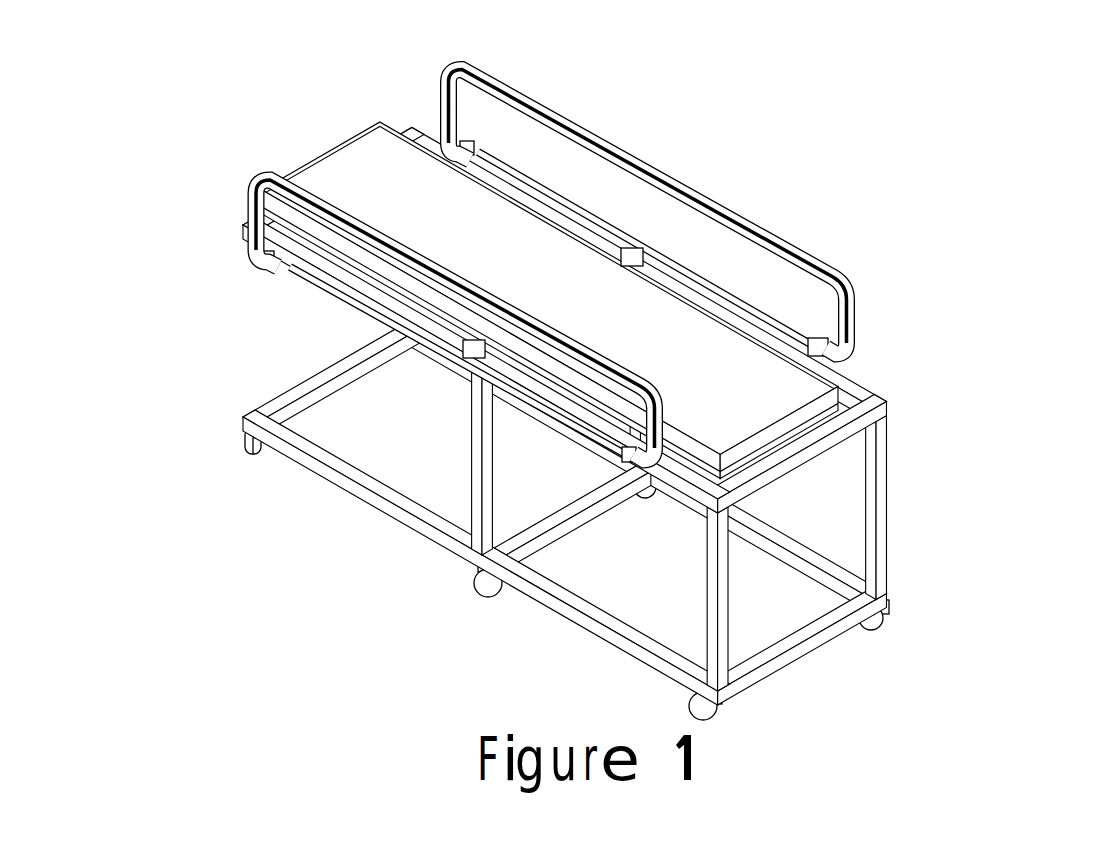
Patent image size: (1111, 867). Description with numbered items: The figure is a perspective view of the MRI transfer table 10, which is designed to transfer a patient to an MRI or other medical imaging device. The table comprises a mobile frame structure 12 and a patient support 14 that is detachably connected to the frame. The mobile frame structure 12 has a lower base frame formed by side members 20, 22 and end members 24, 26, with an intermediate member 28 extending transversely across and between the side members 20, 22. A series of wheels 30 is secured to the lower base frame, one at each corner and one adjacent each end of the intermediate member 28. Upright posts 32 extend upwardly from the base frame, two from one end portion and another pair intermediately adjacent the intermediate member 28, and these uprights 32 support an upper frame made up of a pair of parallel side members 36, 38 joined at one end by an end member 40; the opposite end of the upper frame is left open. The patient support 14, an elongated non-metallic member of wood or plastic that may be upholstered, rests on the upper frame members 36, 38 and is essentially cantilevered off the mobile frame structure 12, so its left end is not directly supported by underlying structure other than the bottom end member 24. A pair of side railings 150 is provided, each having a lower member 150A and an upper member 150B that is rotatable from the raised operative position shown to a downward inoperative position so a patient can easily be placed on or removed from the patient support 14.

The MRI transfer table 10 is at (621, 391).
The mobile frame structure 12 is at (621, 424).
The patient support 14 is at (805, 372).
The side member 20 is at (603, 640).
The side member 22 is at (787, 557).
The end member 24 is at (303, 387).
The end member 26 is at (822, 640).
The intermediate member 28 is at (560, 512).
The wheel 30 is at (243, 445).
The upright post 32 is at (480, 505).
The side member 36 is at (653, 358).
The side member 38 is at (677, 493).
The end member 40 is at (815, 448).
The side railing 150 is at (509, 262).
The lower member 150A is at (557, 183).
The upper member 150B is at (265, 177).